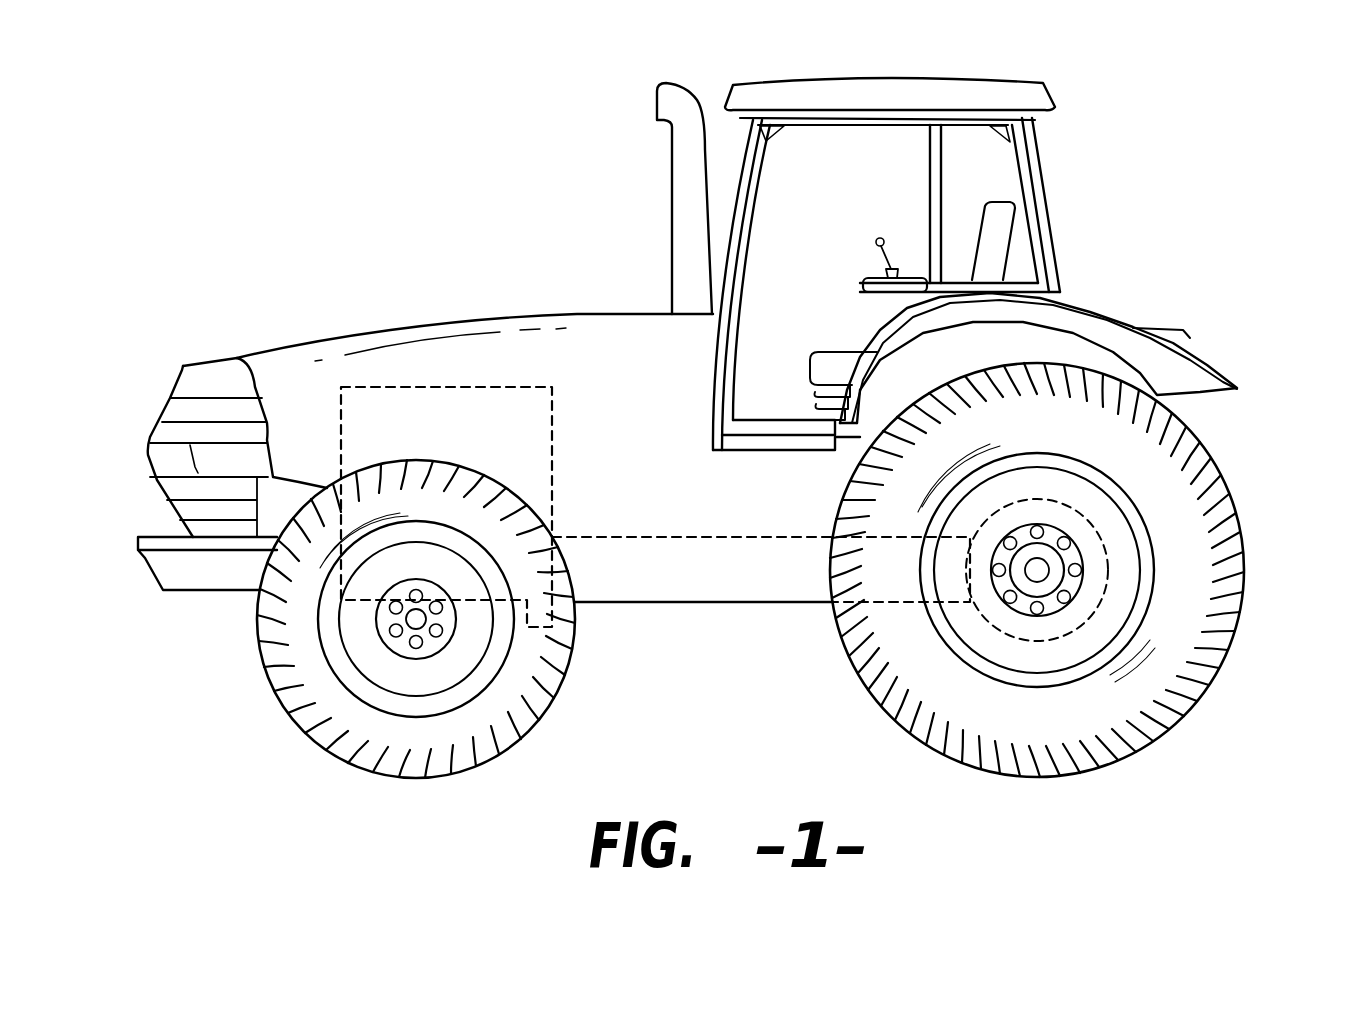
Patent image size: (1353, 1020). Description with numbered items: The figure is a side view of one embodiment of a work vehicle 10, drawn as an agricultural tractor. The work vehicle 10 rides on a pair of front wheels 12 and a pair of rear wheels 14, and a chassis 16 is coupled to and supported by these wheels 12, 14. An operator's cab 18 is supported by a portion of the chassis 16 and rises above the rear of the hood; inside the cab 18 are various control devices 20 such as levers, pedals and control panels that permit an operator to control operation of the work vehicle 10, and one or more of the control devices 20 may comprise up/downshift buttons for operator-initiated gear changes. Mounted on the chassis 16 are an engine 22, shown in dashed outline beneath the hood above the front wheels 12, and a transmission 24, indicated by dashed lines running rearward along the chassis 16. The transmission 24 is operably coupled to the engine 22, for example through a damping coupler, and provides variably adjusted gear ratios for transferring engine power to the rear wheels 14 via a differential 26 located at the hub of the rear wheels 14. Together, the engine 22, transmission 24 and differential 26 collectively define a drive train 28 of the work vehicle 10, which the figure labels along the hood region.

The work vehicle 10 is at (343, 218).
The front wheels 12 is at (252, 638).
The rear wheels 14 is at (1245, 603).
The chassis 16 is at (647, 603).
The operator's cab 18 is at (1047, 210).
The control devices 20 is at (878, 238).
The engine 22 is at (418, 388).
The transmission 24 is at (713, 535).
The differential 26 is at (1115, 575).
The drive train 28 is at (612, 347).